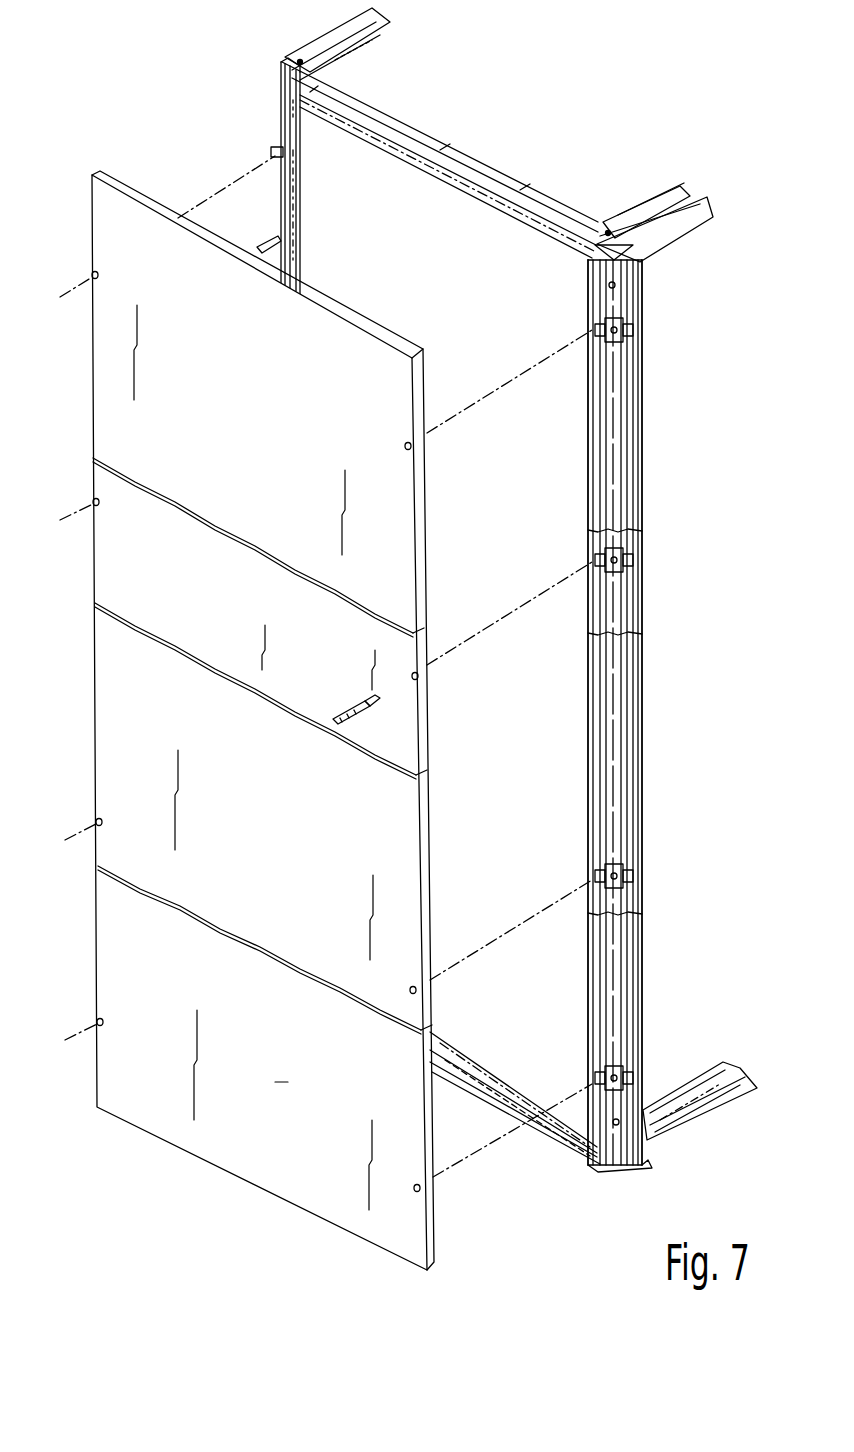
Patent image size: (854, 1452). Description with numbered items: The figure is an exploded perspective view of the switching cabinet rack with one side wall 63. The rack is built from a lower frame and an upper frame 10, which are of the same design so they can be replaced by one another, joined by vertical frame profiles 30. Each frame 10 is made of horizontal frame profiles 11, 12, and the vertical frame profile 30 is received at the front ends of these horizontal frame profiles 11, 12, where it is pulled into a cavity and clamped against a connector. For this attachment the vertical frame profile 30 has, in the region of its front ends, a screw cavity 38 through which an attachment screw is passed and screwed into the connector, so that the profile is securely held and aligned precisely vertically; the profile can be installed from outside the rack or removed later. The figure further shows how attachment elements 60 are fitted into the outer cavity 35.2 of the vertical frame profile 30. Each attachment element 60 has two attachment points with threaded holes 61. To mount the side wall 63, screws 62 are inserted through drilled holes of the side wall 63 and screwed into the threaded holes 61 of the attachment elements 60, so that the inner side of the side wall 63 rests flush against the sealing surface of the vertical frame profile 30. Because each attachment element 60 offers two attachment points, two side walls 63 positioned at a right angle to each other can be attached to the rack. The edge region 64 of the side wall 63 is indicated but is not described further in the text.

The lower/upper frame 10 is at (704, 260).
The horizontal frame profile 11 is at (375, 33).
The horizontal frame profile 12 is at (468, 150).
The vertical frame profile 30 is at (657, 489).
The outer cavity 35.2 is at (612, 690).
The screw cavity 38 is at (607, 1162).
The attachment element 60 is at (616, 866).
The threaded hole 61 is at (598, 877).
The screw 62 is at (336, 722).
The side wall 63 is at (385, 358).
The panel edge 64 is at (336, 300).